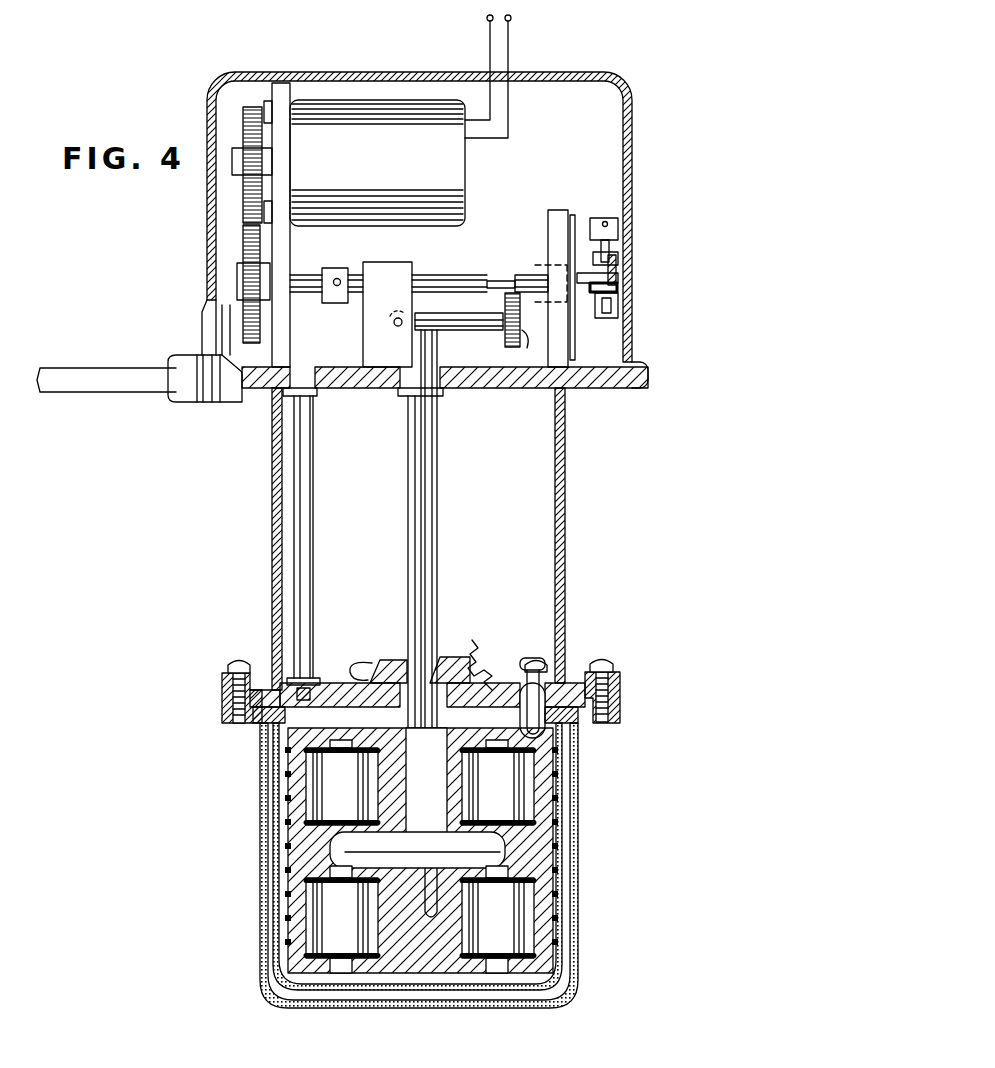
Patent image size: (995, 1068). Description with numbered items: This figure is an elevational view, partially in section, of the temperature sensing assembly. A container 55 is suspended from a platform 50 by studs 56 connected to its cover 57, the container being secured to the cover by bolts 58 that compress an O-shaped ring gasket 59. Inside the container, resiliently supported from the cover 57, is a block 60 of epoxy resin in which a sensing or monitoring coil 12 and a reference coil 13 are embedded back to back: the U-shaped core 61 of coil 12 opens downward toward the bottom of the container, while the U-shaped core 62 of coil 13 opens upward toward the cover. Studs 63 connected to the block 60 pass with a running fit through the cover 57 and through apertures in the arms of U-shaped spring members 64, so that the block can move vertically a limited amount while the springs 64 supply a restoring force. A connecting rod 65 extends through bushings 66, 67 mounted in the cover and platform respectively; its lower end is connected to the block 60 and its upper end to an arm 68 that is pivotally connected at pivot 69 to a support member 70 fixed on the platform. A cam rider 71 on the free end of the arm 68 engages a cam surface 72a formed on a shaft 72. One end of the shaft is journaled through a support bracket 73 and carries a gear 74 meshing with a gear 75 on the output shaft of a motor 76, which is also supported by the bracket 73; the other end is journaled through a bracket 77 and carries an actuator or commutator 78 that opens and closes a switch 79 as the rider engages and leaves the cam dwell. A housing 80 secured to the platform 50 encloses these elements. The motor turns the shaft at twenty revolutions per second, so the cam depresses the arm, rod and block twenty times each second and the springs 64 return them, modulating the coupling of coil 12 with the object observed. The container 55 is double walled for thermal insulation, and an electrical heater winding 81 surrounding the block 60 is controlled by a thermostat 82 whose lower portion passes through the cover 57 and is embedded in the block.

The sensing or monitoring coil 12 is at (483, 928).
The reference coil 13 is at (470, 790).
The platform 50 is at (223, 398).
The container 55 is at (252, 918).
The studs 56 is at (310, 607).
The cover 57 is at (328, 688).
The bolts 58 is at (230, 663).
The O-shaped ring gasket 59 is at (268, 678).
The block 60 is at (385, 733).
The U-shaped core 61 is at (402, 872).
The U-shaped core 62 is at (395, 843).
The studs 63 is at (362, 662).
The U-shaped spring member 64 is at (520, 683).
The connecting rod 65 is at (413, 522).
The bushing 66 is at (445, 653).
The bushing 67 is at (443, 390).
The arm 68 is at (476, 328).
The pivot 69 is at (397, 327).
The support member 70 is at (370, 325).
The cam rider 71 is at (525, 330).
The shaft 72 is at (442, 275).
The cam surface 72a is at (505, 276).
The support bracket 73 is at (280, 255).
The gear 74 is at (243, 252).
The gear 75 is at (262, 152).
The motor 76 is at (447, 182).
The bracket 77 is at (557, 338).
The actuator or commutator 78 is at (612, 267).
The switch 79 is at (603, 250).
The housing 80 is at (632, 172).
The electrical heater winding 81 is at (290, 858).
The thermostat 82 is at (438, 553).